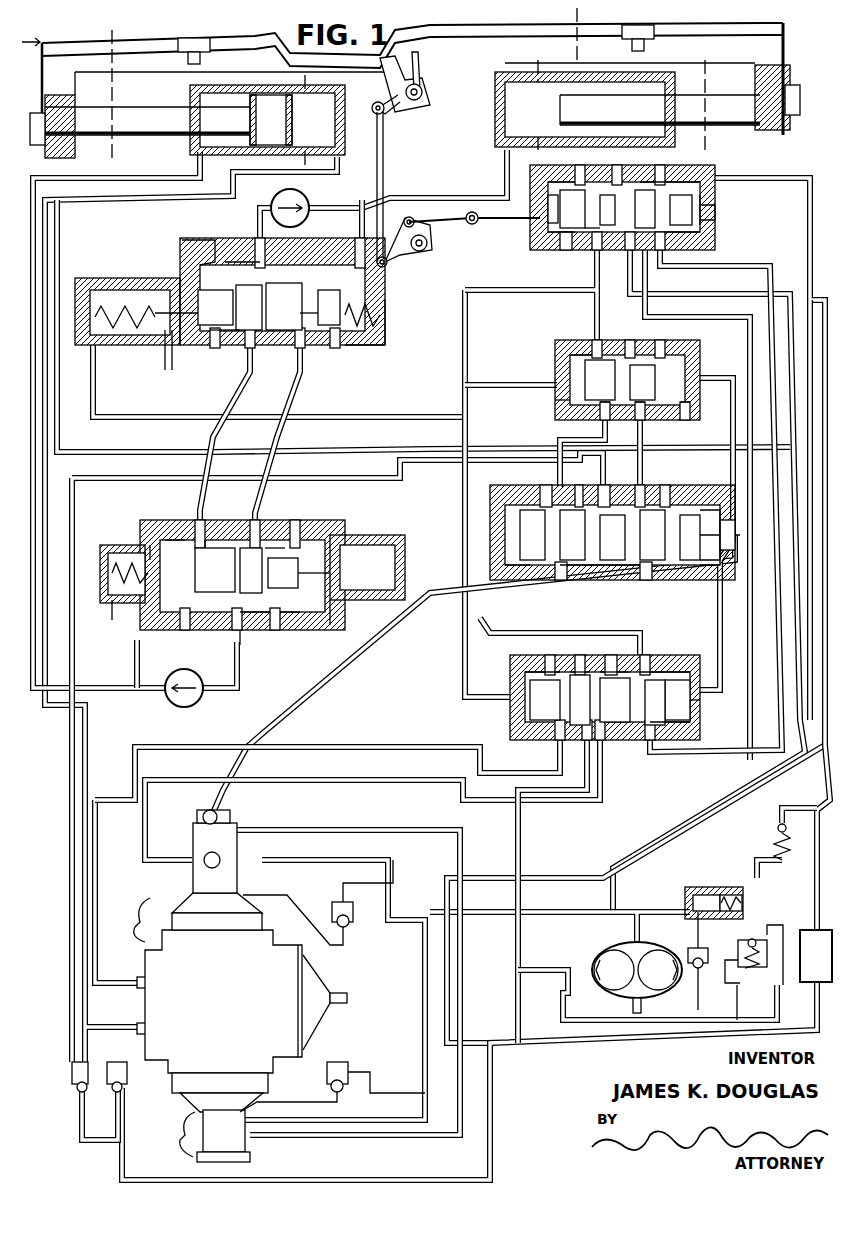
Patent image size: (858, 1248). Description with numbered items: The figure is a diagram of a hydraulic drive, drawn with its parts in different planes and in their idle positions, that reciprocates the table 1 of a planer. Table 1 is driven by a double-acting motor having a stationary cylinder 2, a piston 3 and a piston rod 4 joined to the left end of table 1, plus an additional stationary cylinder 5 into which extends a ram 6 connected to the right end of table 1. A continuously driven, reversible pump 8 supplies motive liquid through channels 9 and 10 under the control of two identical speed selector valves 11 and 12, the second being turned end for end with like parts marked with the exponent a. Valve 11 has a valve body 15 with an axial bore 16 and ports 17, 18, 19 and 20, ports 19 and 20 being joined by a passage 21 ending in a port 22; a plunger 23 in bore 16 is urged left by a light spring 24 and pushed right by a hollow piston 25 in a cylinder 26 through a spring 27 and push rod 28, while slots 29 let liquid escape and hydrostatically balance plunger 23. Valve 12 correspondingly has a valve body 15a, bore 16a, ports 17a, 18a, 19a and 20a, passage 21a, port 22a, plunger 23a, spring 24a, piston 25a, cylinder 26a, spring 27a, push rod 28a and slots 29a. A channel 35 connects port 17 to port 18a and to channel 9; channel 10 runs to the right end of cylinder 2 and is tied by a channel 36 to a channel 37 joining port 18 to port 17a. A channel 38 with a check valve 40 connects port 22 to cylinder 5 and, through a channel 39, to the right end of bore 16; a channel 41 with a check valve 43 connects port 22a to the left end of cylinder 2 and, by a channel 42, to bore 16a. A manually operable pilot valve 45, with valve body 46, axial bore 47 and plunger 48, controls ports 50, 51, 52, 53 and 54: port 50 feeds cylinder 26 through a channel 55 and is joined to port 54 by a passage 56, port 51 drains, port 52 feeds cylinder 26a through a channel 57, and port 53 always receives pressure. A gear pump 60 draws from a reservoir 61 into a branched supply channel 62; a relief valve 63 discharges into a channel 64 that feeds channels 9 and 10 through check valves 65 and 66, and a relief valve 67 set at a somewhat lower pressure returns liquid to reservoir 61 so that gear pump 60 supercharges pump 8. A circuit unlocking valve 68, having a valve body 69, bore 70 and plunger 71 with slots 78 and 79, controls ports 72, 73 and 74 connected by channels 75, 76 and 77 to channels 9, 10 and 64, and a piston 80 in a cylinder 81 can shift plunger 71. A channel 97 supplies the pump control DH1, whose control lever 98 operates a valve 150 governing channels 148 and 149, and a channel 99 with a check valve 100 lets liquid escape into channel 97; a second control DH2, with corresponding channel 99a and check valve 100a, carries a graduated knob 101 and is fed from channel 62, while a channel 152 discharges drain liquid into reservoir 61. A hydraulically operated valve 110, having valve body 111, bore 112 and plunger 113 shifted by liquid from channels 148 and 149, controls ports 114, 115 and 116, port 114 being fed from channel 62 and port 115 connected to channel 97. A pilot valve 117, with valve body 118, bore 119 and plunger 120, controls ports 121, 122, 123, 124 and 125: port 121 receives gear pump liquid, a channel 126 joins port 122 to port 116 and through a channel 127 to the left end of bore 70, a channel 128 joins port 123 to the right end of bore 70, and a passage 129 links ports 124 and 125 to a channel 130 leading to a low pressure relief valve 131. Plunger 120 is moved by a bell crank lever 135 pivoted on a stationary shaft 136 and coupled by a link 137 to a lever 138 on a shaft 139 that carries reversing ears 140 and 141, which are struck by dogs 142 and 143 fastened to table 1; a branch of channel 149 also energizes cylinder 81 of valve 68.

The table 1 is at (25, 42).
The stationary cylinder 2 is at (190, 90).
The piston 3 is at (271, 120).
The piston rod 4 is at (140, 126).
The additional stationary cylinder 5 is at (670, 80).
The ram 6 is at (680, 97).
The pump 8 is at (232, 1010).
The channel 9 is at (115, 479).
The channel 10 is at (155, 202).
The speed selector valve 11 is at (168, 259).
The speed selector valve 12 is at (331, 503).
The valve body 15 is at (385, 338).
The axial bore 16 is at (368, 345).
The port 17 is at (249, 307).
The port 18 is at (295, 345).
The port 19 is at (218, 348).
The port 20 is at (335, 348).
The passage 21 is at (215, 262).
The port 22 is at (258, 262).
The valve plunger 23 is at (284, 306).
The light spring 24 is at (385, 300).
The hollow piston 25 is at (155, 290).
The cylinder 26 is at (95, 290).
The spring 27 is at (112, 345).
The push rod 28 is at (170, 370).
The slots 29 is at (215, 307).
The valve body 15a is at (140, 540).
The axial bore 16a is at (118, 553).
The port 17a is at (262, 555).
The port 18a is at (210, 548).
The port 19a is at (290, 548).
The port 20a is at (175, 540).
The passage 21a is at (280, 640).
The port 22a is at (248, 650).
The valve plunger 23a is at (215, 570).
The light spring 24a is at (120, 605).
The hollow piston 25a is at (345, 545).
The cylinder 26a is at (400, 545).
The spring 27a is at (350, 600).
The push rod 28a is at (310, 630).
The slots 29a is at (299, 573).
The channel 35 is at (215, 456).
The channel 36 is at (107, 452).
The channel 37 is at (283, 437).
The channel 38 is at (260, 212).
The channel 39 is at (358, 218).
The check valve 40 is at (273, 196).
The channel 41 is at (165, 175).
The channel 42 is at (135, 662).
The check valve 43 is at (167, 698).
The manually operable pilot valve 45 is at (491, 512).
The valve body 46 is at (700, 580).
The axial bore 47 is at (712, 495).
The valve plunger 48 is at (540, 580).
The port 50 is at (540, 490).
The port 51 is at (573, 535).
The port 52 is at (612, 537).
The port 53 is at (652, 535).
The port 54 is at (690, 500).
The channel 55 is at (150, 416).
The passage 56 is at (655, 580).
The channel 57 is at (580, 452).
The gear pump 60 is at (630, 948).
The reservoir 61 is at (737, 1005).
The branched supply channel 62 is at (603, 455).
The relief valve 63 is at (698, 890).
The channel 64 is at (120, 1165).
The check valve 65 is at (124, 1086).
The check valve 66 is at (88, 1086).
The relief valve 67 is at (745, 947).
The circuit unlocking valve 68 is at (501, 731).
The valve body 69 is at (660, 735).
The axial bore 70 is at (655, 660).
The valve plunger 71 is at (528, 680).
The port 72 is at (545, 658).
The port 73 is at (615, 660).
The port 74 is at (585, 660).
The channel 75 is at (132, 752).
The channel 76 is at (325, 788).
The channel 77 is at (580, 789).
The slots 78 is at (632, 701).
The slots 79 is at (565, 690).
The piston 80 is at (660, 672).
The cylinder 81 is at (698, 710).
The channel 97 is at (740, 318).
The control lever 98 is at (197, 812).
The channel 99 is at (330, 943).
The check valve 100 is at (350, 921).
The channel 99a is at (370, 1088).
The check valve 100a is at (330, 1062).
The knob 101 is at (250, 1157).
The hydraulically operated valve 110 is at (541, 378).
The valve body 111 is at (555, 410).
The axial bore 112 is at (575, 350).
The valve plunger 113 is at (620, 380).
The port 114 is at (680, 415).
The port 115 is at (640, 418).
The port 116 is at (603, 415).
The pilot valve 117 is at (729, 214).
The valve body 118 is at (538, 177).
The axial bore 119 is at (710, 192).
The valve plunger 120 is at (548, 225).
The port 121 is at (592, 209).
The port 122 is at (595, 238).
The port 123 is at (663, 209).
The port 124 is at (566, 235).
The port 125 is at (675, 240).
The channel 126 is at (597, 306).
The channel 127 is at (466, 326).
The channel 128 is at (760, 267).
The passage 129 is at (692, 175).
The channel 130 is at (800, 165).
The low pressure relief valve 131 is at (770, 834).
The bell crank lever 135 is at (400, 259).
The stationary shaft 136 is at (430, 246).
The link 137 is at (383, 168).
The lever 138 is at (385, 110).
The shaft 139 is at (420, 100).
The reversing ear 140 is at (392, 70).
The reversing ear 141 is at (430, 70).
The dog 142 is at (638, 25).
The dog 143 is at (194, 38).
The channel 148 is at (715, 377).
The channel 149 is at (530, 387).
The valve 150 is at (178, 880).
The channel 152 is at (400, 829).
The pump control DH1 is at (125, 920).
The second DH control DH2 is at (191, 1133).